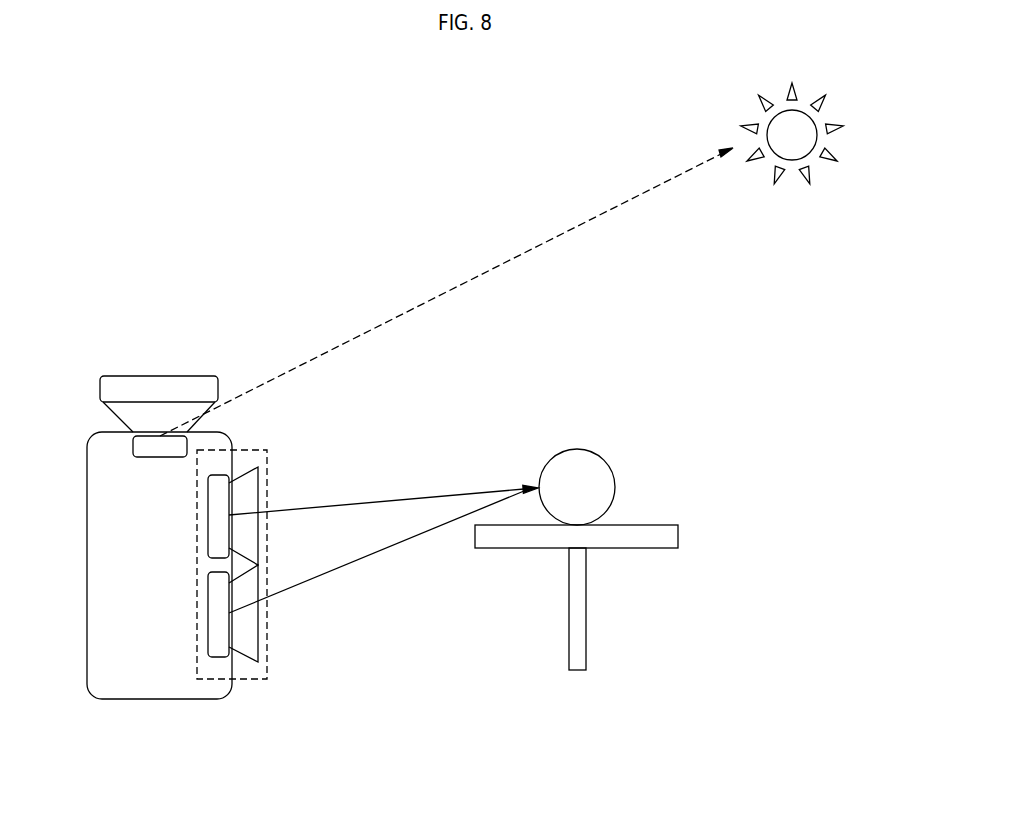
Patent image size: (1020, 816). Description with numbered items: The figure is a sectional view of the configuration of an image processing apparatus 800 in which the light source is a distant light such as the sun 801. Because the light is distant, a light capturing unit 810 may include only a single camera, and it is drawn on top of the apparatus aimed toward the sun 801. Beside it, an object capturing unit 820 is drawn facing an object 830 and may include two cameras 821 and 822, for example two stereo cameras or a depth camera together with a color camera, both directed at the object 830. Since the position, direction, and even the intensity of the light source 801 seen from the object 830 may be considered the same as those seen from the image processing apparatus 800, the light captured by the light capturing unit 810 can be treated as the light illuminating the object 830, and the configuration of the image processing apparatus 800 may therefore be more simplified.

The image processing apparatus 800 is at (160, 699).
The sun 801 is at (792, 160).
The light capturing unit 810 is at (159, 376).
The object capturing unit 820 is at (258, 679).
The camera 821 is at (258, 490).
The camera 822 is at (258, 626).
The object 830 is at (575, 450).